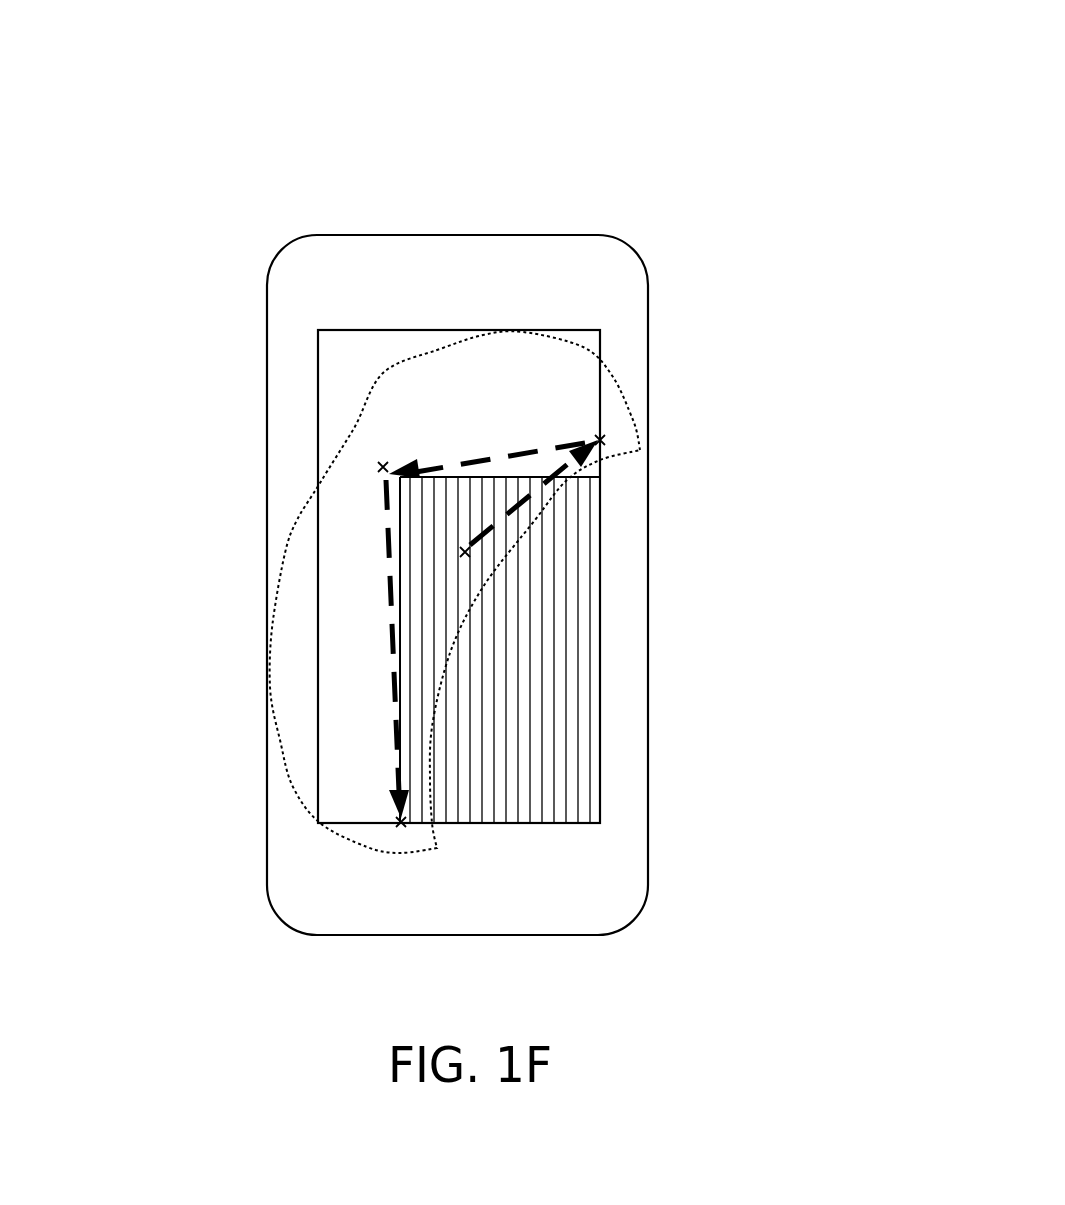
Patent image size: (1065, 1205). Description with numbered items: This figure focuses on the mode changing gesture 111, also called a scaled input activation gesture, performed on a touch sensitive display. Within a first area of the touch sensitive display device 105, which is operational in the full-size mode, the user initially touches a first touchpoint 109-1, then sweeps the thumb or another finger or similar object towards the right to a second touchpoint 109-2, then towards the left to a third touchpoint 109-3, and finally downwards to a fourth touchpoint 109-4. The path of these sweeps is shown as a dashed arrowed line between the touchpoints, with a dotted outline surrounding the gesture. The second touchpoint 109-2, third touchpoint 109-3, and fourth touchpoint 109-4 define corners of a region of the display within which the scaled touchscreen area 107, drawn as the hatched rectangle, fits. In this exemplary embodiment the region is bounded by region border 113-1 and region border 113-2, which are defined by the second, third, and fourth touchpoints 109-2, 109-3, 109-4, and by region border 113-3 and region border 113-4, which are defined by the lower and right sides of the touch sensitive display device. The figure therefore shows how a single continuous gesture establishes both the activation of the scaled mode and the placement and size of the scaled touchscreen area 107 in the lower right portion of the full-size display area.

The first area of the touch sensitive display device 105 is at (318, 365).
The scaled touchscreen area 107 is at (510, 670).
The mode changing gesture 111 is at (437, 350).
The first touchpoint 109-1 is at (470, 577).
The second touchpoint 109-2 is at (605, 432).
The third touchpoint 109-3 is at (368, 465).
The fourth touchpoint 109-4 is at (404, 838).
The region border 113-1 is at (430, 468).
The region border 113-2 is at (384, 547).
The region border 113-3 is at (533, 825).
The region border 113-4 is at (600, 560).